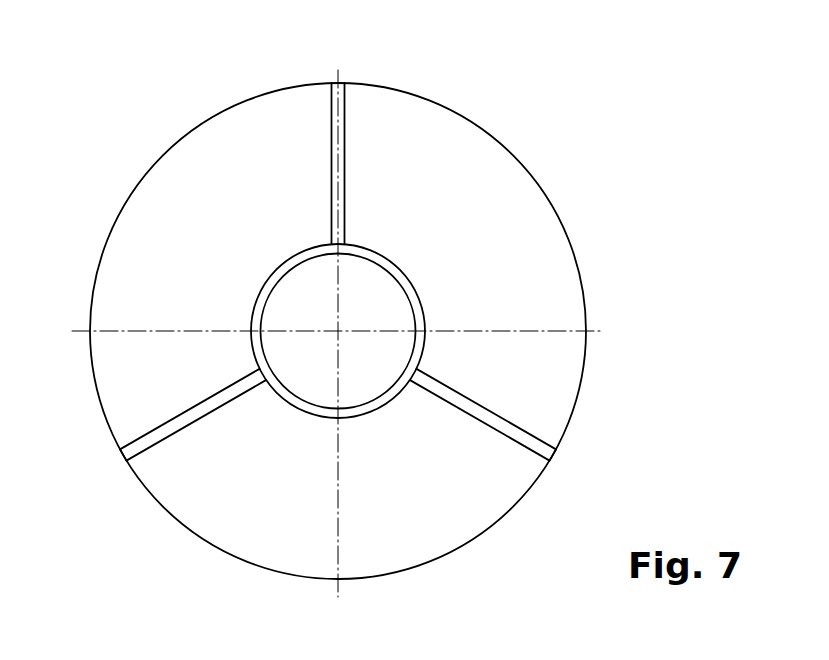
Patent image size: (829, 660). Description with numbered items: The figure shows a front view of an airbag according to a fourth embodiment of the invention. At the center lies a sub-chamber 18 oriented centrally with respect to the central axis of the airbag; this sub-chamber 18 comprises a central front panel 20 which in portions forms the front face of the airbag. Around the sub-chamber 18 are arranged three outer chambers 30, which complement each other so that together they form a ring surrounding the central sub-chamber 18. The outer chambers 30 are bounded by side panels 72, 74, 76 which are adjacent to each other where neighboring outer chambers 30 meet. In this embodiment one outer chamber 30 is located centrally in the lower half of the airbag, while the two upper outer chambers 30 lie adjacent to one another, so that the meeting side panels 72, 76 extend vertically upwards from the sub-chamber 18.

The sub-chamber 18 is at (398, 311).
The central front panel 20 is at (357, 287).
The outer chamber 30 is at (144, 200).
The side panel 72 is at (331, 104).
The side panel 74 is at (140, 478).
The side panel 76 is at (345, 104).